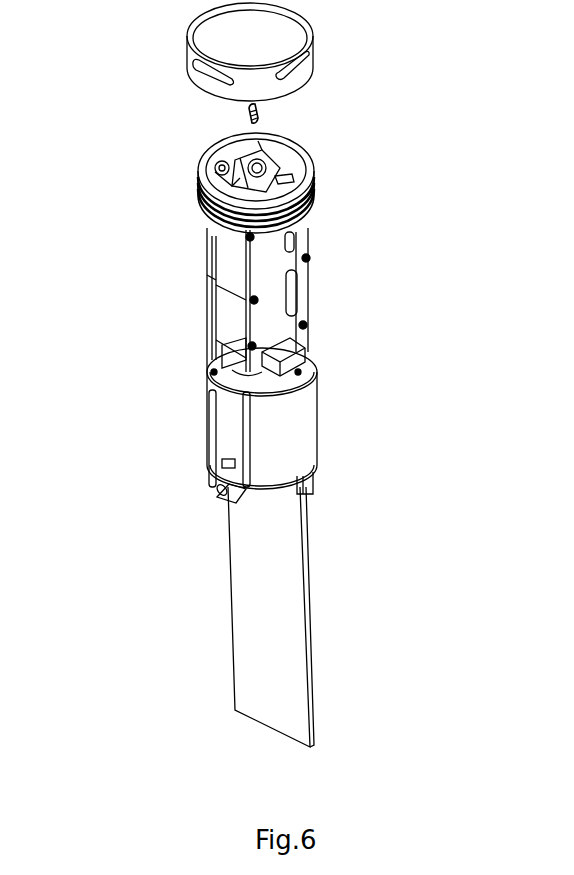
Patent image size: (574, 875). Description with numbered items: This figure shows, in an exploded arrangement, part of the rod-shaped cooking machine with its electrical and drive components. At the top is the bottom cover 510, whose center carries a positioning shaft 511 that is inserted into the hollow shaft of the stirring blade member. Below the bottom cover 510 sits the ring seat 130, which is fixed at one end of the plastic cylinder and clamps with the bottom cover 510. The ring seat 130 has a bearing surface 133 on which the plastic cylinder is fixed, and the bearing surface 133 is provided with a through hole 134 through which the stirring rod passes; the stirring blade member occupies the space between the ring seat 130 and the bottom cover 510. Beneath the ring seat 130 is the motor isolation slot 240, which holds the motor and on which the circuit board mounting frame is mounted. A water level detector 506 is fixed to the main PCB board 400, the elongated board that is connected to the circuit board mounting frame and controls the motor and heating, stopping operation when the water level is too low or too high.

The bottom cover 510 is at (225, 14).
The positioning shaft 511 is at (247, 107).
The ring seat 130 is at (205, 207).
The bearing surface 133 is at (215, 165).
The through hole 134 is at (318, 191).
The motor isolation slot 240 is at (300, 442).
The water level detector 506 is at (225, 497).
The main PCB board 400 is at (290, 640).